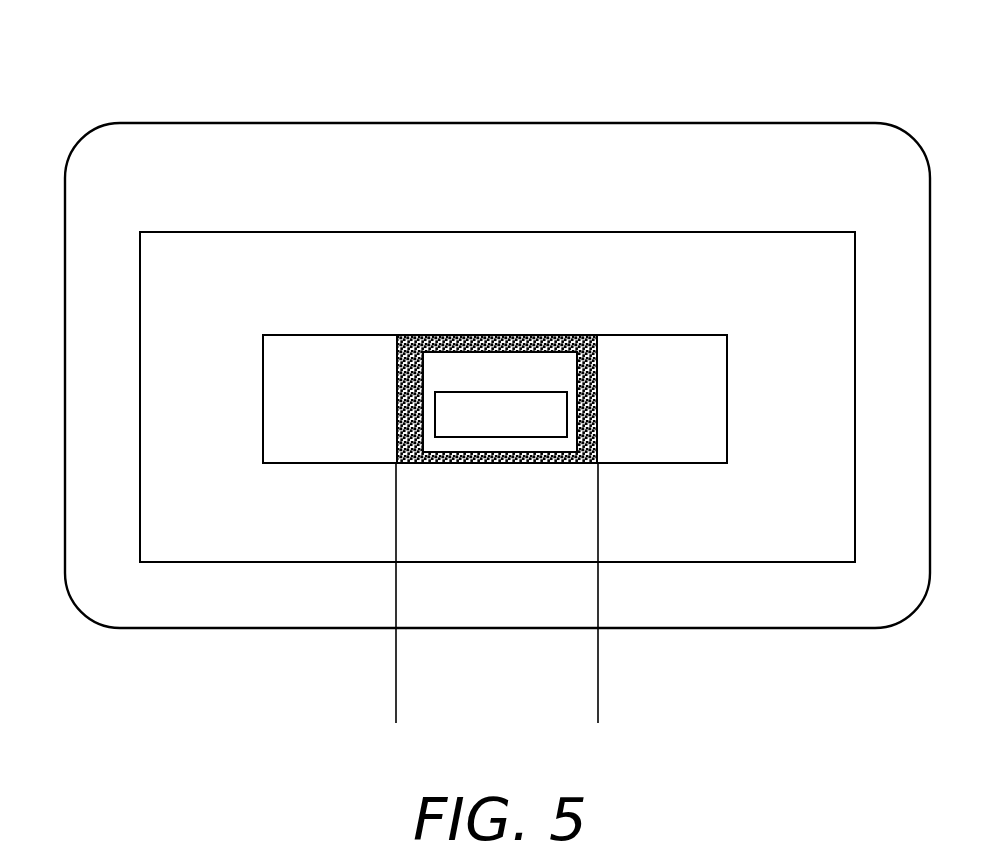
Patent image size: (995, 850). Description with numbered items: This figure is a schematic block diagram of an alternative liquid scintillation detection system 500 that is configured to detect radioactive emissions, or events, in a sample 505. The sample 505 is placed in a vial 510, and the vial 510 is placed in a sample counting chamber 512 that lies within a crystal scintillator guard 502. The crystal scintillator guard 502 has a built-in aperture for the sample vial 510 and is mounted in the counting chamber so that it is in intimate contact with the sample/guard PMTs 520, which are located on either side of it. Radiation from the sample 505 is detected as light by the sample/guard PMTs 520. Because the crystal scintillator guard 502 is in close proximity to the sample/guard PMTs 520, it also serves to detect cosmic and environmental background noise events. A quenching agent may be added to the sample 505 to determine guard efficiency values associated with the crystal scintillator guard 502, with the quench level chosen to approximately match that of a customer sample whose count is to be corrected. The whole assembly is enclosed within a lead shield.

The liquid scintillation detection system 500 is at (799, 71).
The crystal scintillator guard 502 is at (585, 443).
The sample 505 is at (462, 438).
The vial 510 is at (497, 350).
The sample counting chamber 512 is at (466, 333).
The sample/guard PMTs 520 is at (305, 335).